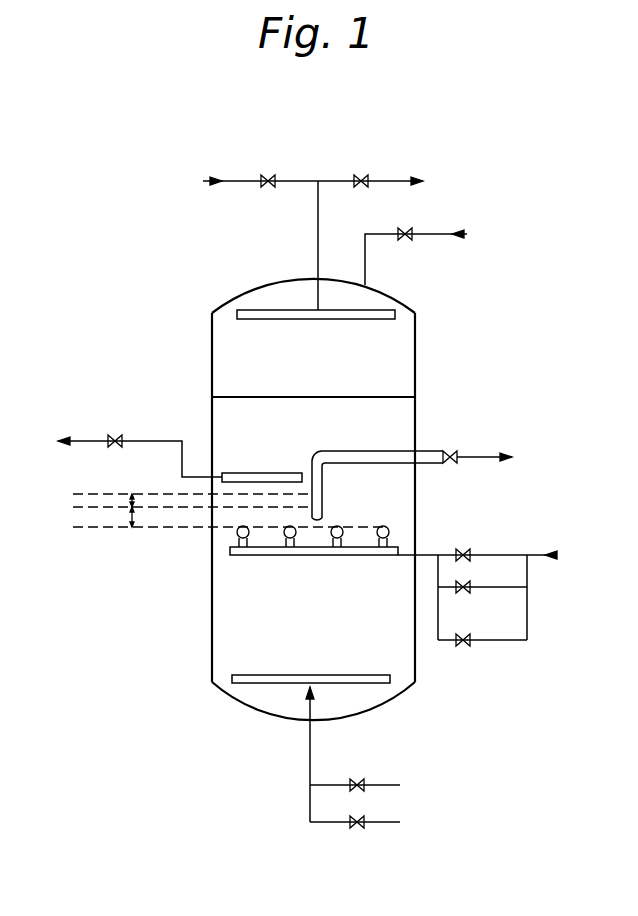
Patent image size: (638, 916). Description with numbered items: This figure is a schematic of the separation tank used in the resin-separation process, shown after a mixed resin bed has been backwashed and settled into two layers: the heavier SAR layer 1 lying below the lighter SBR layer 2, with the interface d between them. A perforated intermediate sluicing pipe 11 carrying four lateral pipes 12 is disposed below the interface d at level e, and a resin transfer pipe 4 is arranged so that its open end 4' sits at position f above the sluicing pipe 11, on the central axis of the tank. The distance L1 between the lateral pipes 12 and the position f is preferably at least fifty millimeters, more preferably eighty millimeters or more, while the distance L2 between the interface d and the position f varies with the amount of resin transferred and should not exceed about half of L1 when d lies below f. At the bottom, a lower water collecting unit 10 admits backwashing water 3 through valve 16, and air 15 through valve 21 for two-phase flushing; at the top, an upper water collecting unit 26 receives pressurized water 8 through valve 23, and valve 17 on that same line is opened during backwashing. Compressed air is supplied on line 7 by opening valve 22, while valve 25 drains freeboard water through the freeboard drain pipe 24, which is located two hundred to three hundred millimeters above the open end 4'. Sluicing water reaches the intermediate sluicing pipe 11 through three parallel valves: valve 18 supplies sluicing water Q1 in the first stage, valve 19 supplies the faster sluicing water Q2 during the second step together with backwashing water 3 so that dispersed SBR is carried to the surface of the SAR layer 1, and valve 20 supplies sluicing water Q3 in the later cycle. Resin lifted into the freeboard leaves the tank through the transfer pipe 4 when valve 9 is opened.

The SAR layer 1 is at (254, 628).
The SBR layer 2 is at (254, 434).
The backwashing water 3 is at (393, 785).
The resin transfer pipe 4 is at (380, 460).
The open end of resin transfer pipe 4' is at (383, 501).
The liquid supply line 7 is at (433, 234).
The pressurized water 8 is at (235, 185).
The valve 9 is at (460, 450).
The lower water collecting unit 10 is at (242, 682).
The intermediate sluicing pipe 11 is at (229, 552).
The lateral pipes 12 is at (238, 532).
The air 15 is at (400, 821).
The valve 16 is at (360, 778).
The valve 17 is at (366, 175).
The valve 18 is at (466, 548).
The valve 19 is at (462, 595).
The valve 20 is at (462, 648).
The valve 21 is at (358, 830).
The valve 22 is at (406, 243).
The valve 23 is at (266, 174).
The freeboard drain pipe 24 is at (240, 473).
The valve 25 is at (113, 434).
The upper water collecting unit 26 is at (263, 320).
The interface d is at (180, 491).
The position of intermediate sluicing pipe e is at (220, 525).
The position of open end f is at (185, 506).
The distance between lateral pipes and open end L1 is at (143, 517).
The distance between interface and open end L2 is at (150, 498).
The sluicing water Q1 is at (503, 545).
The sluicing water Q2 is at (495, 605).
The sluicing water Q3 is at (498, 662).